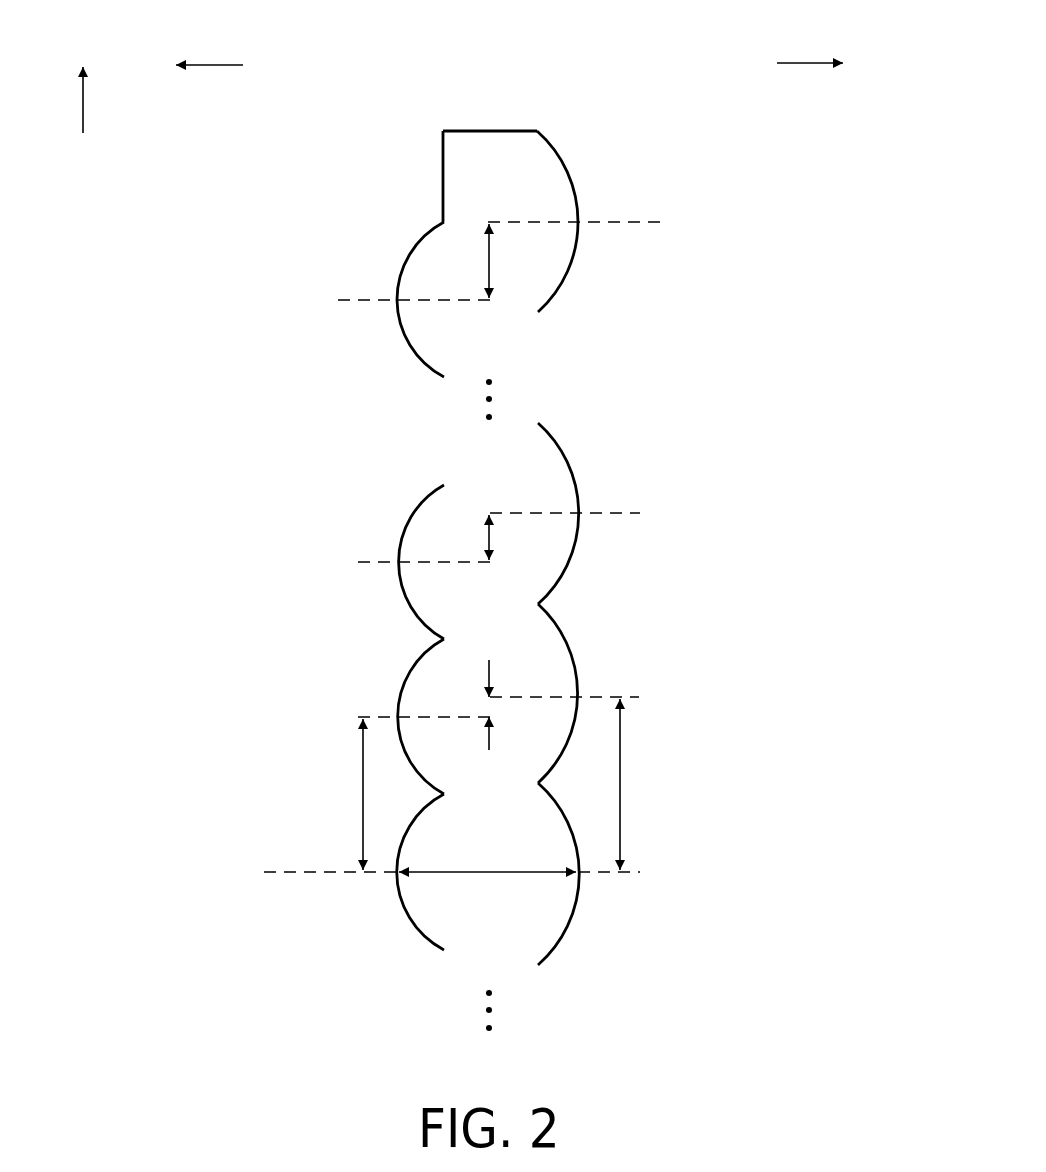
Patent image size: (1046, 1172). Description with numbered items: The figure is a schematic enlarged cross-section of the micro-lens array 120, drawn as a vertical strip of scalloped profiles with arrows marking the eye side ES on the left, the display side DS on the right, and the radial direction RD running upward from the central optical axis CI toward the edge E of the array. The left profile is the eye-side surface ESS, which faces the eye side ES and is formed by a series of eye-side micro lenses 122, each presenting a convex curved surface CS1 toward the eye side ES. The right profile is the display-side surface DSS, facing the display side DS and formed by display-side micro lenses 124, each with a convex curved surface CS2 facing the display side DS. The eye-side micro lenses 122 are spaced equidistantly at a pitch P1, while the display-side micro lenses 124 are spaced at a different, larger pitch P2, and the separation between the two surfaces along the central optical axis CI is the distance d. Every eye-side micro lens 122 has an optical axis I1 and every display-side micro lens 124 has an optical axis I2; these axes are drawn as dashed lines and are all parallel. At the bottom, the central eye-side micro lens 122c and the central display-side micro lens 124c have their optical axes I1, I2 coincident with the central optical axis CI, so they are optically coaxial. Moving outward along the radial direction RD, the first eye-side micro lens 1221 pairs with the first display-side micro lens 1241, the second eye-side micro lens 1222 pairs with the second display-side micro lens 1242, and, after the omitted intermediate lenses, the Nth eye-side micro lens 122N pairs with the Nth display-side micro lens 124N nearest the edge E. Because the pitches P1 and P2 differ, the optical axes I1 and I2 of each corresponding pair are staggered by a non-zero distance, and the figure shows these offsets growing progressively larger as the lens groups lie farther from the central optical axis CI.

The micro-lens array 120 is at (490, 562).
The eye-side micro lenses 122 is at (322, 588).
The Nth eye-side micro lens 122N is at (318, 287).
The second eye-side micro lens 1222 is at (413, 517).
The first eye-side micro lens 1221 is at (425, 670).
The central eye-side micro lens 122c is at (412, 900).
The display-side micro lenses 124 is at (636, 552).
The Nth display-side micro lens 124N is at (641, 211).
The second display-side micro lens 1242 is at (557, 451).
The first display-side micro lens 1241 is at (557, 631).
The central display-side micro lens 124c is at (556, 925).
The edge E is at (492, 128).
The eye-side surface ESS is at (426, 230).
The display-side surface DSS is at (562, 150).
The curved surface CS1 is at (413, 354).
The curved surface CS2 is at (570, 277).
The optical axis I1 is at (350, 300).
The optical axis I2 is at (666, 222).
The central optical axis CI is at (285, 872).
The pitch P1 is at (346, 794).
The pitch P2 is at (637, 784).
The distance d is at (487, 855).
The eye side ES is at (209, 42).
The display side DS is at (810, 42).
The radial direction RD is at (103, 100).